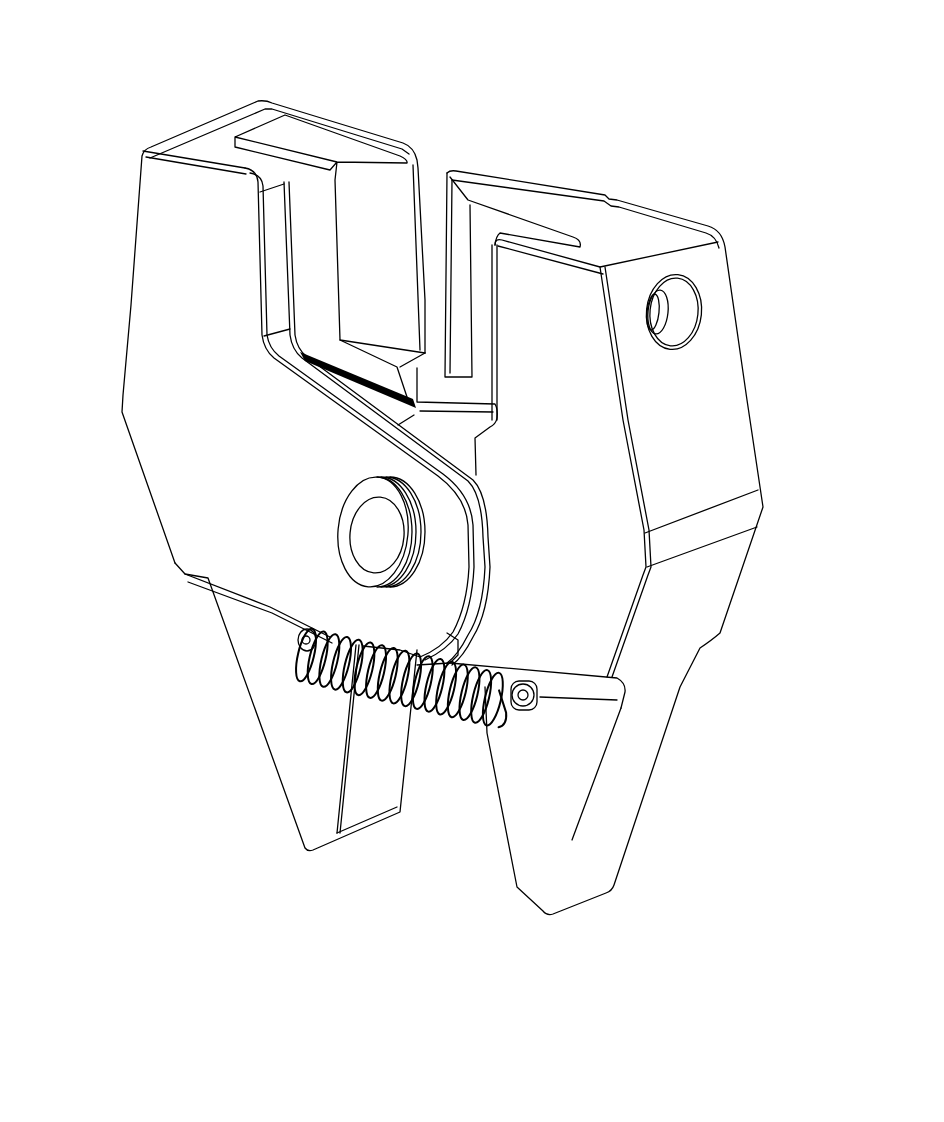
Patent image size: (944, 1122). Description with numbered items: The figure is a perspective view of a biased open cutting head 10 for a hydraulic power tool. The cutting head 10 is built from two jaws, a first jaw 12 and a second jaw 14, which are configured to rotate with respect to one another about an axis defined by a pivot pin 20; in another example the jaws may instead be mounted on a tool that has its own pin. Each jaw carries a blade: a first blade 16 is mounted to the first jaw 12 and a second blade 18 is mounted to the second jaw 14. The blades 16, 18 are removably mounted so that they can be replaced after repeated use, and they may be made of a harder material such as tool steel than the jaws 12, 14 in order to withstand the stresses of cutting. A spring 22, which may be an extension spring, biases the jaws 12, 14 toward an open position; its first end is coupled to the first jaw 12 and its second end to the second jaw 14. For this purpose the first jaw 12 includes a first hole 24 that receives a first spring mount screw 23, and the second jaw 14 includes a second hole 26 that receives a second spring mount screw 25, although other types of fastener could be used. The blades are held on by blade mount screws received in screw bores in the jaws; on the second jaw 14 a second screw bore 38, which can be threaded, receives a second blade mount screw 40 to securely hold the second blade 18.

The biased open cutting head 10 is at (108, 63).
The first jaw 12 is at (143, 312).
The second jaw 14 is at (596, 428).
The first blade 16 is at (360, 146).
The second blade 18 is at (537, 190).
The pivot pin 20 is at (335, 522).
The spring 22 is at (305, 680).
The first spring mount screw 23 is at (300, 640).
The first hole 24 is at (297, 630).
The second spring anchor 25 is at (540, 697).
The second hole 26 is at (540, 695).
The second screw bore 38 is at (682, 299).
The second blade mount screw 40 is at (650, 317).